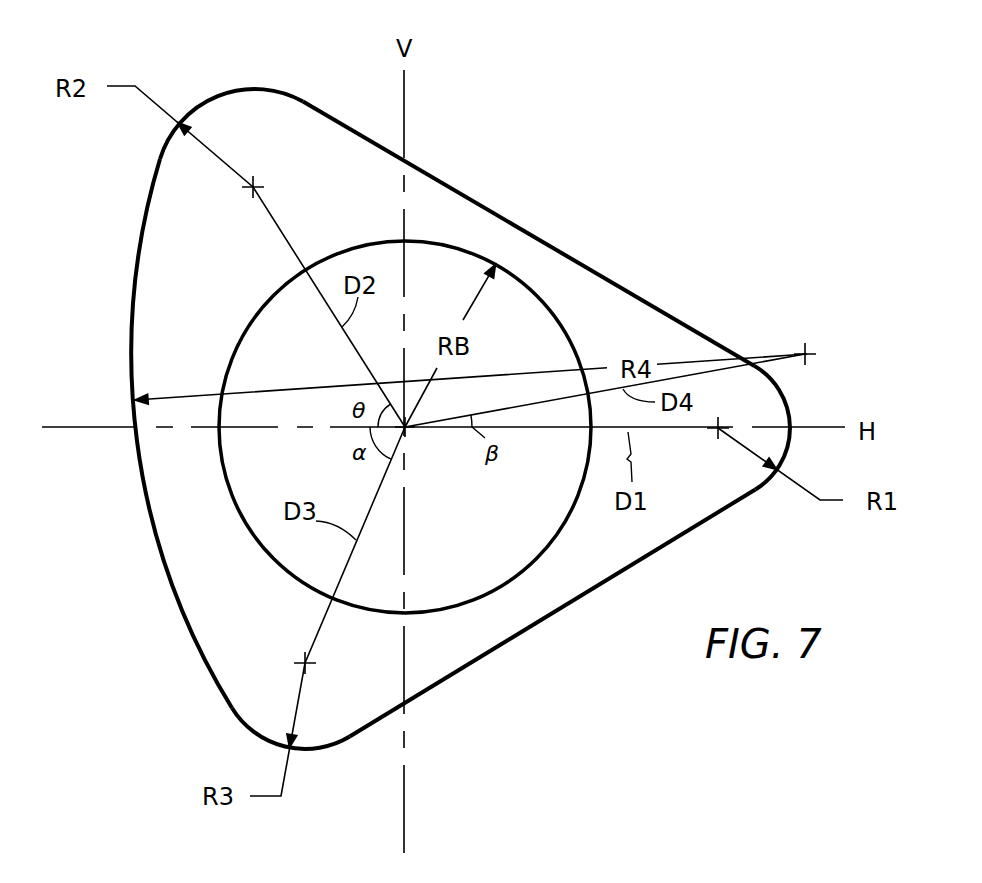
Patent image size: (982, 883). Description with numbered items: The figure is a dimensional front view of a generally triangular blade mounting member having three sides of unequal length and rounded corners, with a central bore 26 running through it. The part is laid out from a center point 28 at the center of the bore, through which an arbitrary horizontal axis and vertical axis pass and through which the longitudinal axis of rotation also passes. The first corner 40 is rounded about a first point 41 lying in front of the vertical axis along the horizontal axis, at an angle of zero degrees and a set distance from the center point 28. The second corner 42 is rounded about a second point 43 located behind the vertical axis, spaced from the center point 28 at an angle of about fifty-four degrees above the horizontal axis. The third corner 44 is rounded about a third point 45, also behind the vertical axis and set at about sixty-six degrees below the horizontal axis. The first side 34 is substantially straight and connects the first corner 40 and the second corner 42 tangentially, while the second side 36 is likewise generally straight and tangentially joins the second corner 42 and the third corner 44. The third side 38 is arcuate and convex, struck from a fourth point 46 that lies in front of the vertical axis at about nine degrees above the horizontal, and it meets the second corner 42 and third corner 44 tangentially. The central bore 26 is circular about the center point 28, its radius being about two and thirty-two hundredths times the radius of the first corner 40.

The central bore 26 is at (461, 604).
The center point 28 is at (406, 427).
The first side 34 is at (537, 238).
The second side 36 is at (527, 628).
The third side 38 is at (147, 524).
The first corner 40 is at (787, 452).
The first point 41 is at (716, 431).
The second corner 42 is at (217, 92).
The second point 43 is at (256, 185).
The third corner 44 is at (303, 749).
The third point 45 is at (302, 661).
The fourth point 46 is at (807, 352).